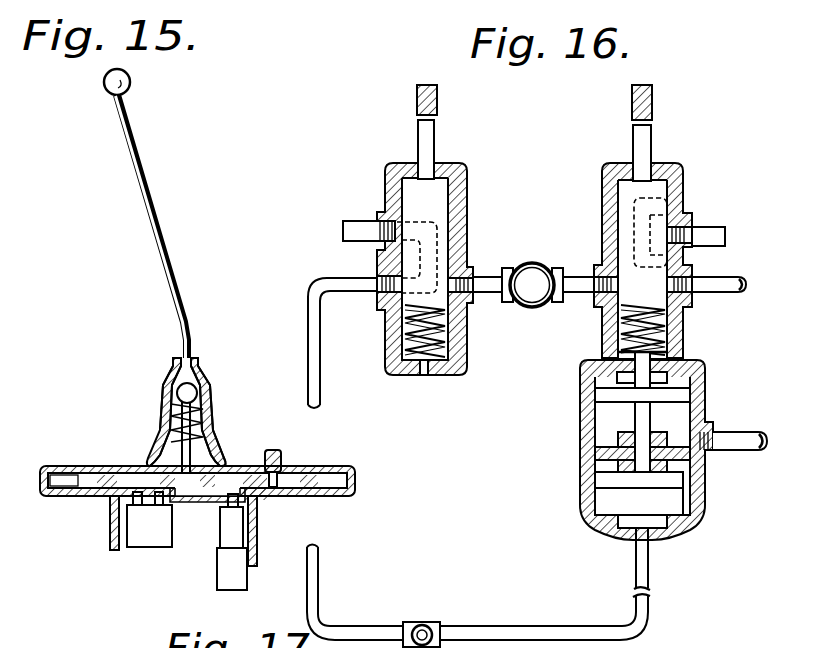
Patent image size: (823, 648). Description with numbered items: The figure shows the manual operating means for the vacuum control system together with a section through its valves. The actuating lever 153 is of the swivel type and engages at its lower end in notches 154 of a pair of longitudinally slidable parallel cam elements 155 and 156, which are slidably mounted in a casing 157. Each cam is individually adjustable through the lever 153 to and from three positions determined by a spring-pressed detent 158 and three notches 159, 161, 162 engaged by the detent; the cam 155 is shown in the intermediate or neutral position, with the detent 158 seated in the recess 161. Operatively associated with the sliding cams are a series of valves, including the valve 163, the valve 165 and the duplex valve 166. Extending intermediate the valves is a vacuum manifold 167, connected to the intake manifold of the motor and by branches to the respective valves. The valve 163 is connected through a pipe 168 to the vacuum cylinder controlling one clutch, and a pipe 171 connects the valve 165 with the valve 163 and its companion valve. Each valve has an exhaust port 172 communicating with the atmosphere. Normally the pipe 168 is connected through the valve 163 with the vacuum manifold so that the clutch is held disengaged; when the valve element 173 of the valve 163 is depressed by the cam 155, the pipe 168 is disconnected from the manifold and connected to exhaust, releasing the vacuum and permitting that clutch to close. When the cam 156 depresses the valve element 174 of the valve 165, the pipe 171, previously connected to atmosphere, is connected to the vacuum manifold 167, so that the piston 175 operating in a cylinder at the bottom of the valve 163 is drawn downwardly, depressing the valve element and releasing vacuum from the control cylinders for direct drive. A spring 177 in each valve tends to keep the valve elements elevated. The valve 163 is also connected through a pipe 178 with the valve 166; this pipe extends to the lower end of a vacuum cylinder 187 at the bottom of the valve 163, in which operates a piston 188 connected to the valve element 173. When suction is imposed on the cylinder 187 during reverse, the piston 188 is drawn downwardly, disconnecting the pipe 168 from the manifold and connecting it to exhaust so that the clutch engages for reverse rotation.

In FIG. 15, the actuating lever 153 is at (162, 258).
In FIG. 15, the notches 154 is at (179, 487).
In FIG. 15, the cam element 155 is at (90, 481).
In FIG. 16, the cam element 155 is at (654, 88).
In FIG. 16, the cam element 156 is at (422, 84).
In FIG. 15, the casing 157 is at (354, 483).
In FIG. 15, the spring-pressed detent 158 is at (280, 474).
In FIG. 15, the notch 159 is at (243, 494).
In FIG. 15, the notch 161 is at (290, 495).
In FIG. 15, the notch 162 is at (320, 495).
In FIG. 15, the valve 163 is at (239, 577).
In FIG. 16, the valve 163 is at (601, 330).
In FIG. 16, the valve 165 is at (466, 343).
In FIG. 15, the valve 166 is at (147, 533).
In FIG. 16, the vacuum manifold 167 is at (535, 264).
In FIG. 16, the pipe 168 is at (736, 281).
In FIG. 16, the pipe 171 is at (318, 330).
In FIG. 16, the exhaust port 172 is at (352, 223).
In FIG. 16, the valve element 173 is at (686, 178).
In FIG. 16, the valve element 174 is at (448, 186).
In FIG. 16, the piston 175 is at (610, 482).
In FIG. 16, the spring 177 is at (396, 348).
In FIG. 16, the pipe 178 is at (738, 432).
In FIG. 16, the vacuum cylinder 187 is at (600, 436).
In FIG. 16, the piston 188 is at (600, 395).